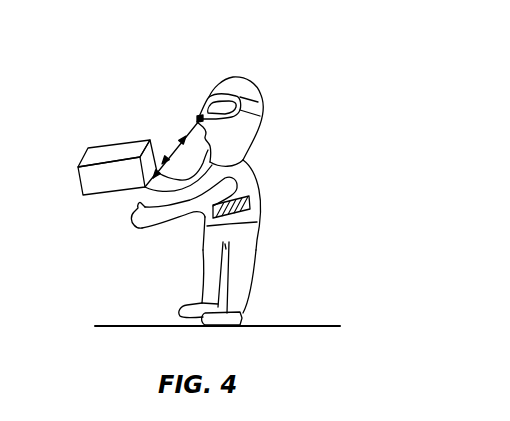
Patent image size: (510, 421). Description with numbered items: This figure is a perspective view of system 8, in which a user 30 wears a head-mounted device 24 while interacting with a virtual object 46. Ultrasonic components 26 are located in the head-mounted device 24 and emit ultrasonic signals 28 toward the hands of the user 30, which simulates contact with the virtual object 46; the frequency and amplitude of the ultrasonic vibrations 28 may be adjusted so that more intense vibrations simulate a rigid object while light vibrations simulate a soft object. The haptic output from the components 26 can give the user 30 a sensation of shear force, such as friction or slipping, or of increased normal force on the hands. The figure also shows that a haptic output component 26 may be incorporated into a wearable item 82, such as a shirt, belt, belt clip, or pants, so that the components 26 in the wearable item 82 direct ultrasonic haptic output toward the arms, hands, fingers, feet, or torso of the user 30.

The system 8 is at (259, 75).
The head-mounted device 24 is at (248, 117).
The ultrasonic components 26 is at (201, 116).
The ultrasonic signals 28 is at (173, 150).
The user 30 is at (248, 230).
The virtual object 46 is at (87, 148).
The wearable item 82 is at (243, 173).